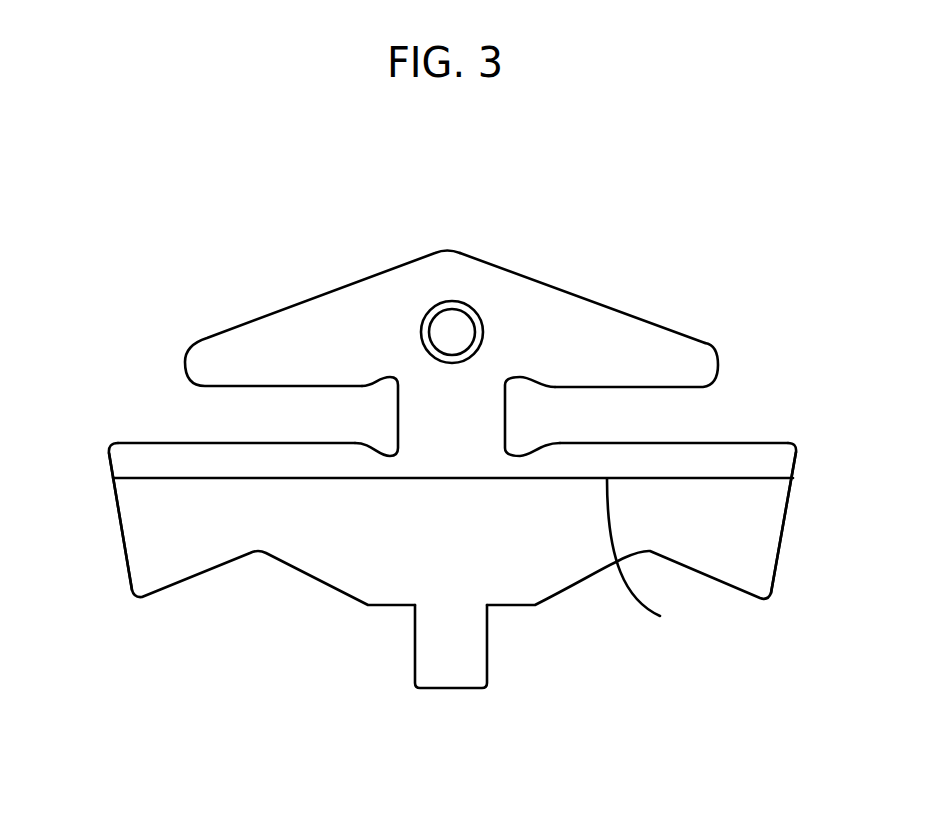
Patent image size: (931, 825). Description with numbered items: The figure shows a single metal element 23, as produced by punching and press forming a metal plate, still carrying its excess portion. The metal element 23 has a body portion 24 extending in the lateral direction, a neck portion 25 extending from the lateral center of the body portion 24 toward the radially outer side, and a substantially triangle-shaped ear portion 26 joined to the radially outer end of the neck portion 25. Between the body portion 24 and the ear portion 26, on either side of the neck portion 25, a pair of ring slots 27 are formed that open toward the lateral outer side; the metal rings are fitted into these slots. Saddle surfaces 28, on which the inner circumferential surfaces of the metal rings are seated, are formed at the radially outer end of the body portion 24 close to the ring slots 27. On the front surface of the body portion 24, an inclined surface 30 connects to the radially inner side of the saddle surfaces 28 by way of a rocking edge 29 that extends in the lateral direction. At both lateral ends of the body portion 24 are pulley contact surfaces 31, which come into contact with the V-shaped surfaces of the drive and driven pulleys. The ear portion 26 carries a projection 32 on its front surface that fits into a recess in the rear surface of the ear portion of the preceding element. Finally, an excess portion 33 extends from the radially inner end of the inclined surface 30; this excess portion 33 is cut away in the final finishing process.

The metal element 23 is at (573, 280).
The body portion 24 is at (280, 565).
The neck portion 25 is at (456, 421).
The ear portion 26 is at (353, 307).
The ring slots 27 is at (302, 412).
The saddle surfaces 28 is at (145, 441).
The rocking edge 29 is at (649, 556).
The inclined surface 30 is at (395, 570).
The pulley contact surfaces 31 is at (115, 522).
The projection 32 is at (457, 331).
The excess portion 33 is at (475, 652).